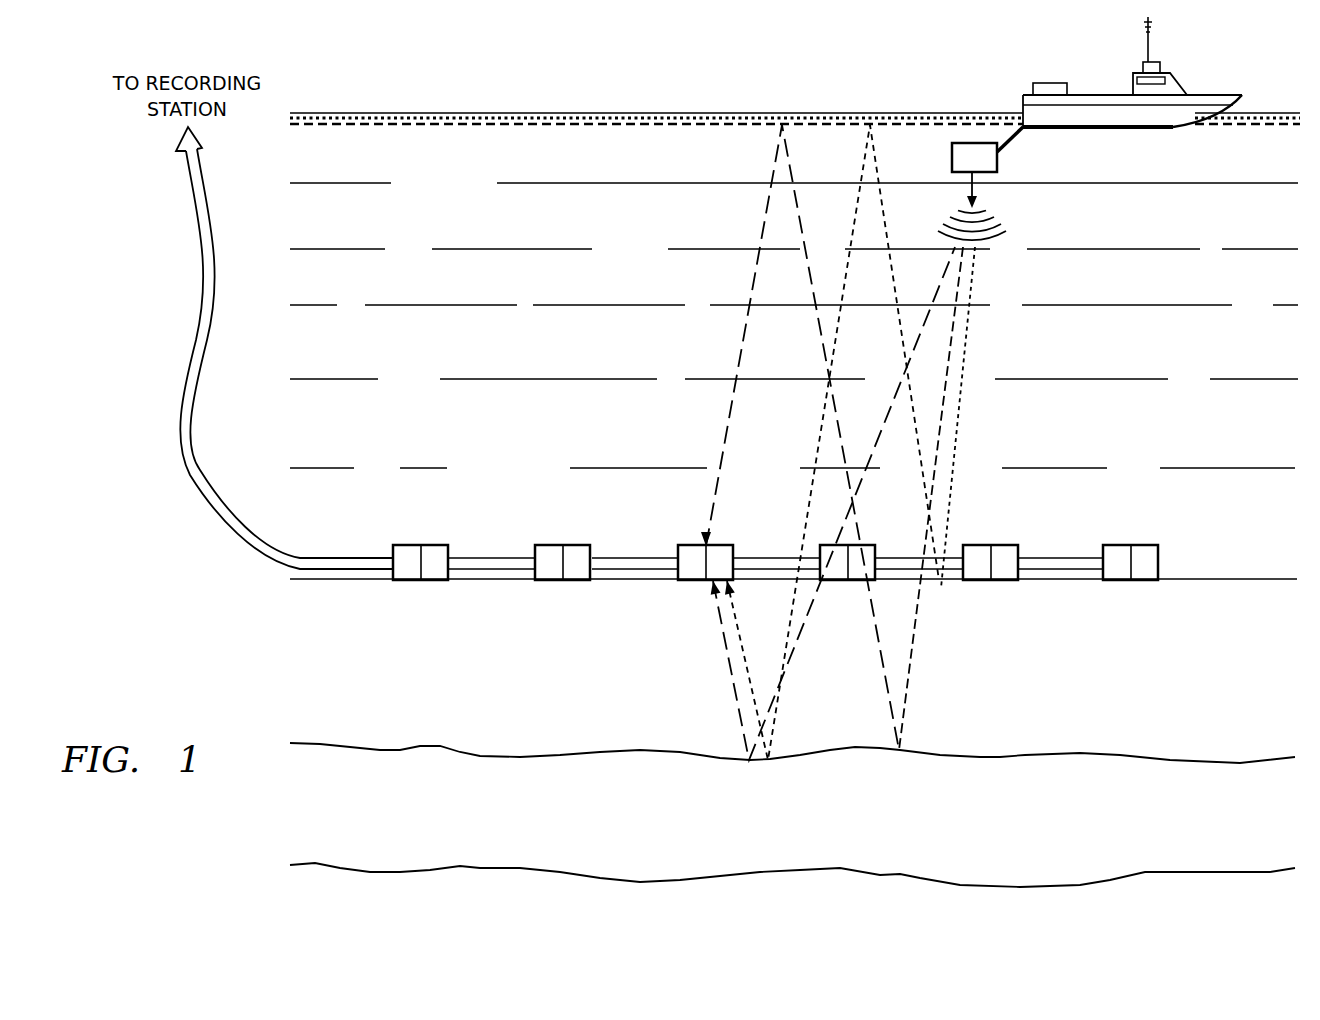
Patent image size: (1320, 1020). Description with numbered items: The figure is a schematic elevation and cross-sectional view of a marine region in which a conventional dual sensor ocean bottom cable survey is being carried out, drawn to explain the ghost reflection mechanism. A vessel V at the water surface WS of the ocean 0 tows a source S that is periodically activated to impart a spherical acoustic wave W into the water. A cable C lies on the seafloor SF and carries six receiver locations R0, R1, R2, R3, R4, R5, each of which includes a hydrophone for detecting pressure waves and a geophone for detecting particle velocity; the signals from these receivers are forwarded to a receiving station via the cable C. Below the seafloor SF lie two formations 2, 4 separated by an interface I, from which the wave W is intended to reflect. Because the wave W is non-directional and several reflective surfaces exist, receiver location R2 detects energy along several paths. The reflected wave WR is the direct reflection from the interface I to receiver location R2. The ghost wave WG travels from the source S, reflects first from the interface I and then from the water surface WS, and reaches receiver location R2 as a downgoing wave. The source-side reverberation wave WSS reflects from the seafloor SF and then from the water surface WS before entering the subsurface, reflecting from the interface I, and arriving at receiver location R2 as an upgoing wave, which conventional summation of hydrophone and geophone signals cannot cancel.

The cable C is at (194, 326).
The water surface WS is at (636, 112).
The ocean 0 is at (1178, 359).
The vessel V is at (1219, 95).
The source S is at (987, 149).
The acoustic wave W is at (997, 227).
The ghost wave WG is at (740, 348).
The reflected wave WR is at (733, 690).
The source-side reverberation wave WSS is at (967, 355).
The seafloor SF is at (1234, 578).
The receiver location R0 is at (421, 545).
The receiver location R1 is at (563, 546).
The receiver location R2 is at (690, 545).
The receiver location R3 is at (865, 545).
The receiver location R4 is at (992, 544).
The receiver location R5 is at (1133, 545).
The formation 2 is at (1178, 672).
The interface I is at (1000, 757).
The formation 4 is at (1178, 819).